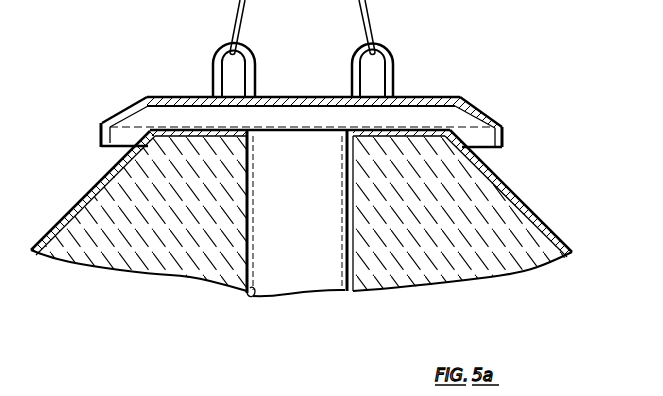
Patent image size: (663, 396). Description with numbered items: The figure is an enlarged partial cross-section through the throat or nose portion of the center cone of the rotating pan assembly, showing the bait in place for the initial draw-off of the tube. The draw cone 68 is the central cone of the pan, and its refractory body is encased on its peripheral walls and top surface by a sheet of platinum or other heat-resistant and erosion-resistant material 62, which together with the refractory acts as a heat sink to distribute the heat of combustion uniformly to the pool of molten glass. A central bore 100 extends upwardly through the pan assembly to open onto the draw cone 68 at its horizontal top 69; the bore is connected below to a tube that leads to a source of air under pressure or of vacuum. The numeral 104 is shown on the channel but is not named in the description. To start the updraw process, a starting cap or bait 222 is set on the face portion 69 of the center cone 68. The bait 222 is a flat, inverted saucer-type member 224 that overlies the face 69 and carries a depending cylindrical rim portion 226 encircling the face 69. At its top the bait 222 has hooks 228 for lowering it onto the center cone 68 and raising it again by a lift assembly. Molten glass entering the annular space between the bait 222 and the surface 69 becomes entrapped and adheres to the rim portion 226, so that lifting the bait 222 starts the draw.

The heat-resistant and erosion-resistant material 62 is at (519, 196).
The draw cone 68 is at (550, 231).
The horizontal top 69 is at (172, 96).
The central bore 100 is at (340, 293).
The channel liner 104 is at (252, 298).
The bait 222 is at (331, 102).
The inverted saucer-type member 224 is at (316, 97).
The cylindrical rim portion 226 is at (503, 133).
The hooks 228 is at (350, 60).